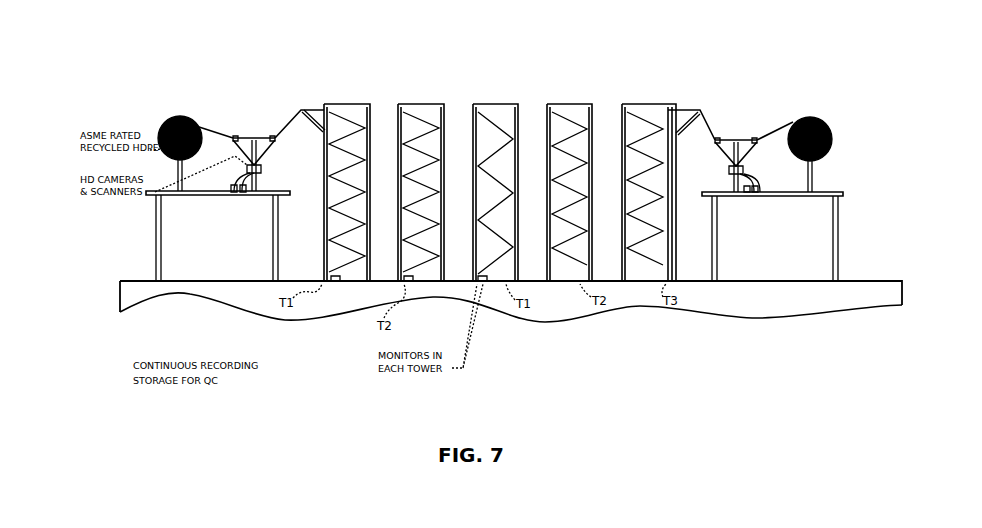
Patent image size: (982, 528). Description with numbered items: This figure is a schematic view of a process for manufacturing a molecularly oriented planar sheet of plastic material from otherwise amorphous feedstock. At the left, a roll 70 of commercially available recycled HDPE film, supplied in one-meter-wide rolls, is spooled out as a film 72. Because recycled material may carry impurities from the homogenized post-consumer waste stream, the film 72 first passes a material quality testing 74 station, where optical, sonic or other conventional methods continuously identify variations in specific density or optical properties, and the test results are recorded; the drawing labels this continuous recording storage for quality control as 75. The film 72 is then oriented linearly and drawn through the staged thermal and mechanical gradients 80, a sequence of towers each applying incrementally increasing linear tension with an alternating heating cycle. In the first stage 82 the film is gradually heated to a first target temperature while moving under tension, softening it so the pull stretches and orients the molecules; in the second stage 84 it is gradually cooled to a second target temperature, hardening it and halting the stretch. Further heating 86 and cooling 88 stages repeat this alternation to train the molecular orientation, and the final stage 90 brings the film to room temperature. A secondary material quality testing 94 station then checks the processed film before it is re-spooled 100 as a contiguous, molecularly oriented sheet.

The roll of recycled HDPE film 70 is at (170, 120).
The film 72 is at (208, 128).
The material quality testing 74 is at (205, 236).
The HD cameras and scanners 75 is at (243, 193).
The staged thermal and mechanical gradients 80 is at (688, 68).
The first stage 82 is at (356, 104).
The second stage 84 is at (419, 104).
The heating stage 86 is at (493, 104).
The cooling stage 88 is at (568, 104).
The final stage 90 is at (642, 104).
The secondary material quality testing 94 is at (752, 196).
The re-spooling 100 is at (830, 124).